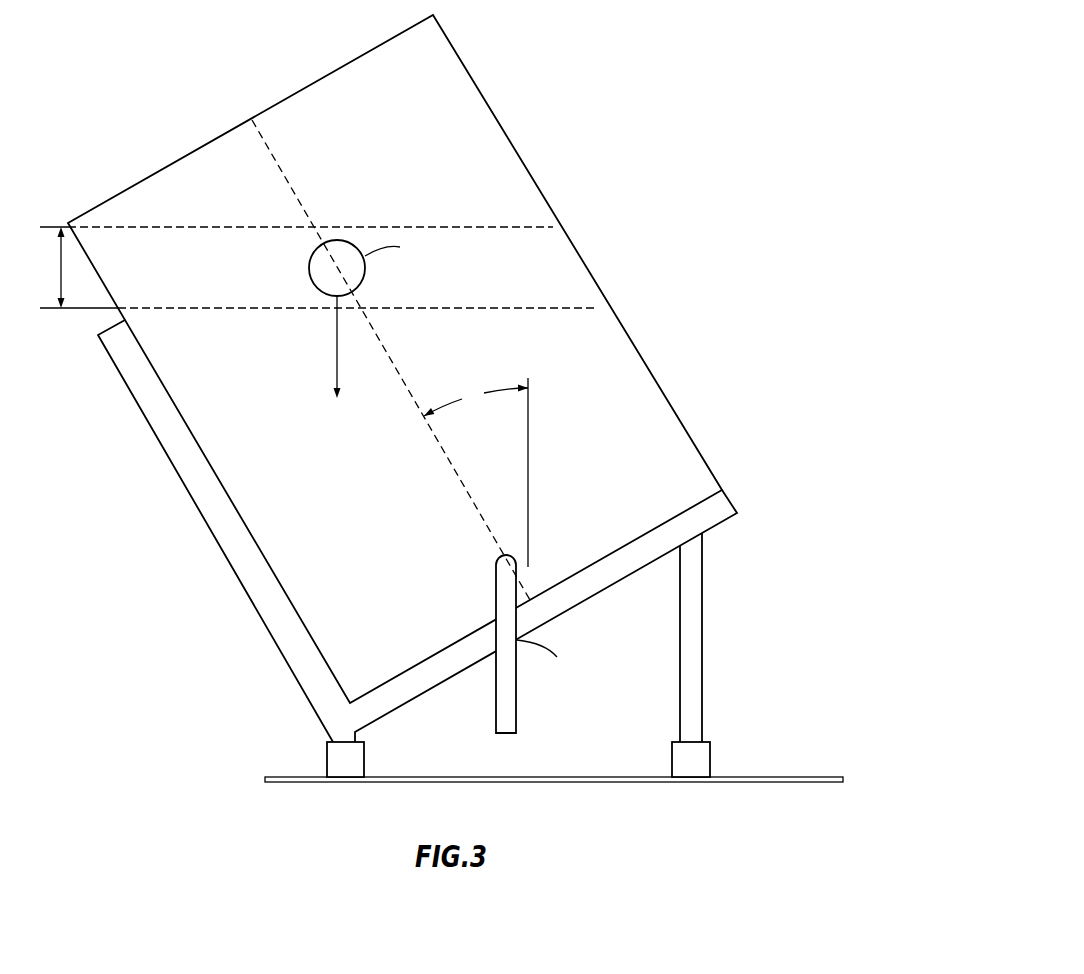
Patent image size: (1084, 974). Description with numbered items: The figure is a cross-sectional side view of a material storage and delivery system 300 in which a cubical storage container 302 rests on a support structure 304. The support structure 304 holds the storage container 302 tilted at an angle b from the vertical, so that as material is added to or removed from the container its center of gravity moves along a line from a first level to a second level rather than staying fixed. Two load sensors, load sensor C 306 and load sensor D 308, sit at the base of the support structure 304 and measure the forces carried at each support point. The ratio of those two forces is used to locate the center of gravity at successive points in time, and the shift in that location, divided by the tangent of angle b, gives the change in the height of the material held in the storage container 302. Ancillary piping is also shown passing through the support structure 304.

The material storage and delivery system 300 is at (665, 87).
The storage container 302 is at (471, 78).
The support structure 304 is at (735, 504).
The load sensor C 306 is at (364, 768).
The load sensor D 308 is at (710, 765).